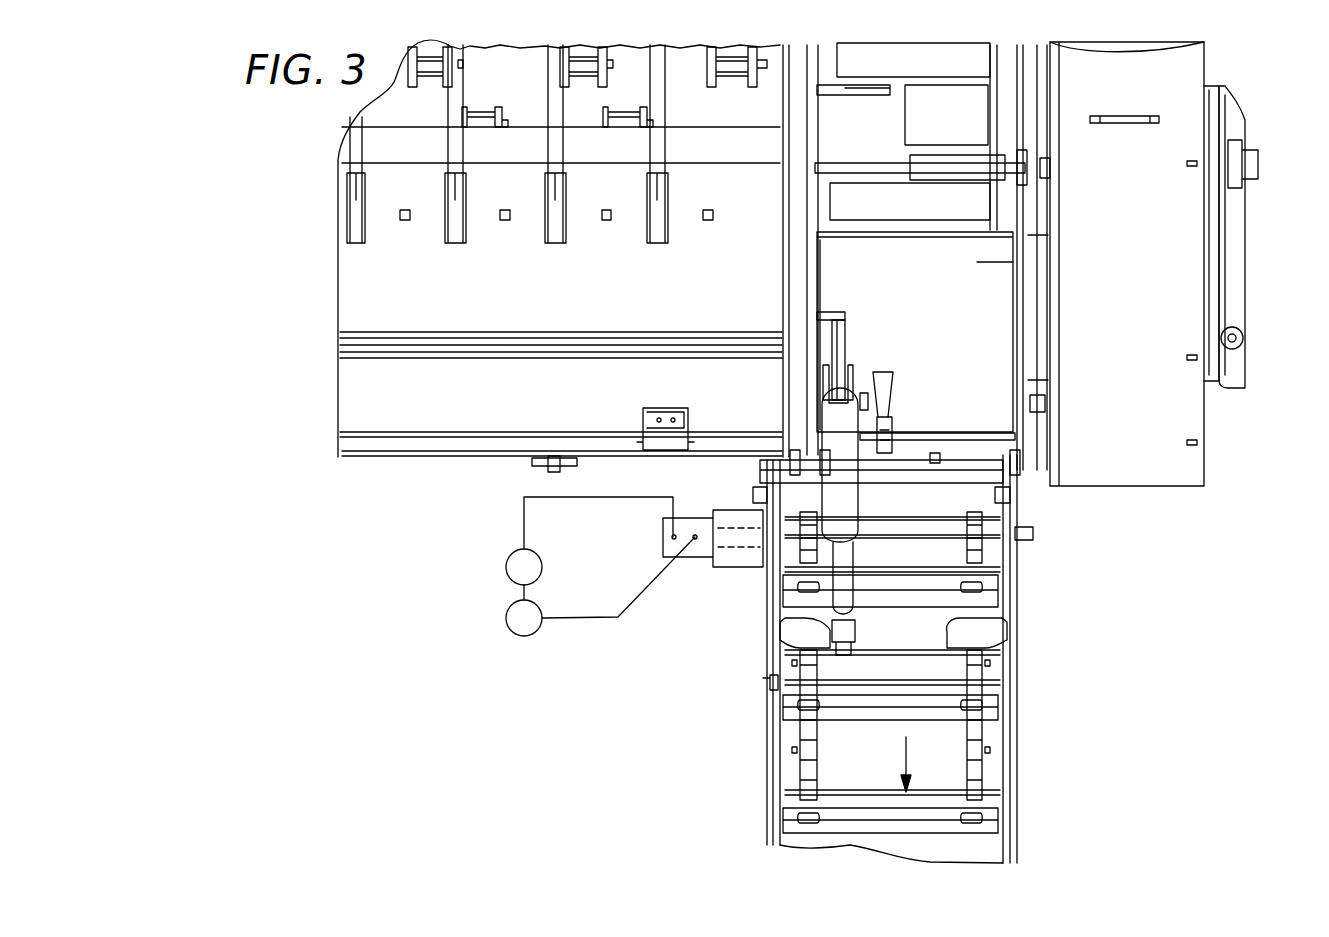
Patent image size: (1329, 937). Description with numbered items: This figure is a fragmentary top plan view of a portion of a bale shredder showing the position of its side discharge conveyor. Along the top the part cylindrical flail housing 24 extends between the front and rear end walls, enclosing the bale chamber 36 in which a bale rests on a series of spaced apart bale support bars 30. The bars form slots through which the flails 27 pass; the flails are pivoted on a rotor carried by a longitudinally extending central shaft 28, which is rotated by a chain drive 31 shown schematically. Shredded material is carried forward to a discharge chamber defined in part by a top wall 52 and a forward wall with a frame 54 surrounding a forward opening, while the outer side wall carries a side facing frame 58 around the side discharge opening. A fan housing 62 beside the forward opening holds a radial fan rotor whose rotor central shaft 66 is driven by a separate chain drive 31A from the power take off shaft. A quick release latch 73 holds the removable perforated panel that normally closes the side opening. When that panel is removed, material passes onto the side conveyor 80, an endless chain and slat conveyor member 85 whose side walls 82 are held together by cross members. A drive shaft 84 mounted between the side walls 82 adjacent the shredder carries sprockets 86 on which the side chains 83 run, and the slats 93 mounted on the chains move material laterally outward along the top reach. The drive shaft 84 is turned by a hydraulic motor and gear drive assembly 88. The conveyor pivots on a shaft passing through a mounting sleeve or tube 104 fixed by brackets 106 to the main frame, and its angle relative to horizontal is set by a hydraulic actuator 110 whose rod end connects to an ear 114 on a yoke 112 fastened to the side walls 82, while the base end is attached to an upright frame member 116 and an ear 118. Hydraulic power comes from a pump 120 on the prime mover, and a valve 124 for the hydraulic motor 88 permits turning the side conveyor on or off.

The part cylindrical flail housing 24 is at (598, 307).
The bale chamber 36 is at (560, 268).
The bale support bars 30 is at (552, 142).
The flails 27 is at (582, 78).
The central shaft 28 is at (835, 88).
The chain drive 31 is at (977, 113).
The separate chain drive 31A is at (910, 212).
The rotor central shaft 66 is at (995, 172).
The top wall 52 is at (833, 275).
The frame 54 is at (1023, 318).
The fan housing 62 is at (1140, 413).
The side facing frame 58 is at (1040, 418).
The hydraulic actuator 110 is at (832, 436).
The upright frame member 116 is at (828, 312).
The ear 118 is at (840, 338).
The quick release latch 73 is at (888, 390).
The mounting sleeve or tube 104 is at (908, 470).
The brackets 106 is at (800, 470).
The sprockets 86 is at (752, 493).
The side conveyor 80 is at (1015, 617).
The drive shaft 84 is at (1025, 540).
The side walls 82 is at (782, 748).
The side chains 83 is at (805, 668).
The yoke 112 is at (808, 635).
The ear 114 is at (847, 660).
The chain and slat conveyor member 85 is at (782, 815).
The slats 93 is at (1000, 815).
The pump 120 is at (512, 553).
The valve 124 is at (508, 610).
The hydraulic motor and gear drive assembly 88 is at (698, 560).